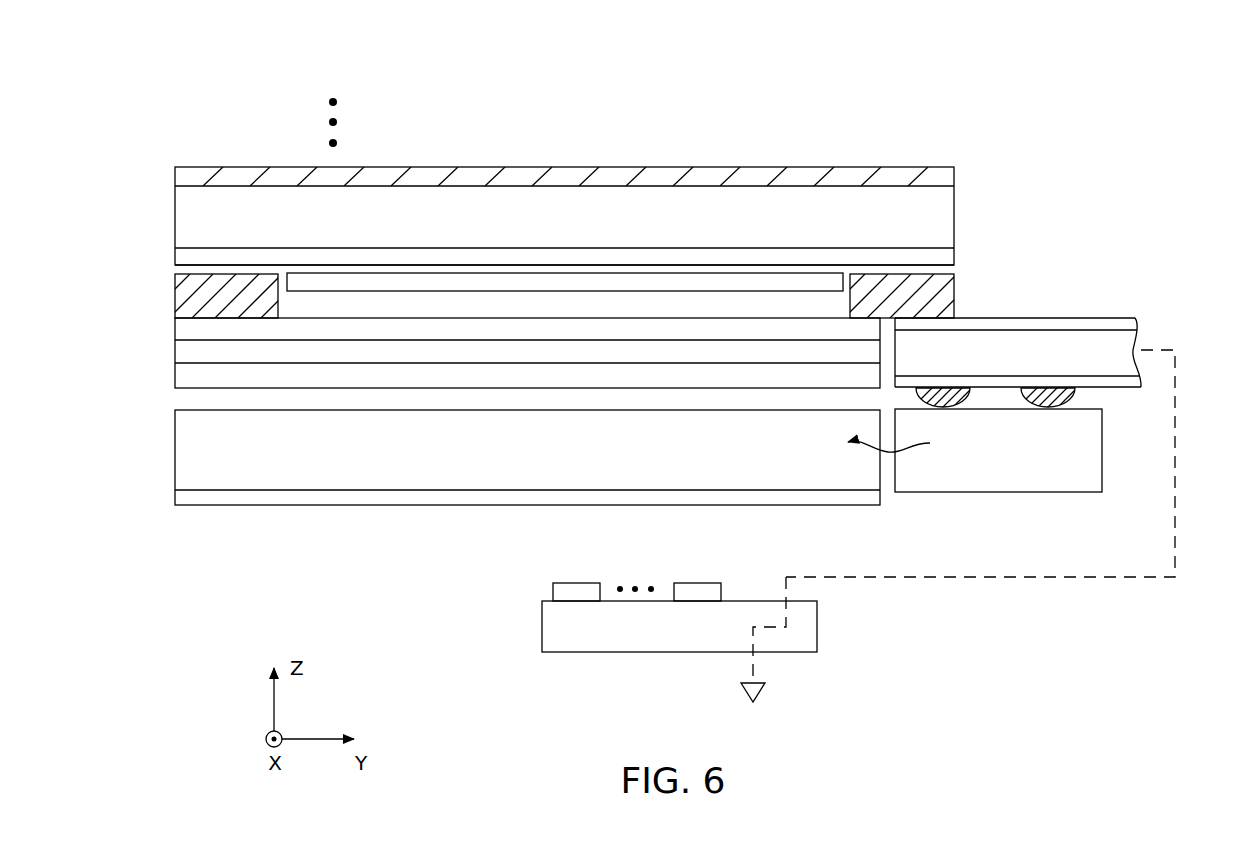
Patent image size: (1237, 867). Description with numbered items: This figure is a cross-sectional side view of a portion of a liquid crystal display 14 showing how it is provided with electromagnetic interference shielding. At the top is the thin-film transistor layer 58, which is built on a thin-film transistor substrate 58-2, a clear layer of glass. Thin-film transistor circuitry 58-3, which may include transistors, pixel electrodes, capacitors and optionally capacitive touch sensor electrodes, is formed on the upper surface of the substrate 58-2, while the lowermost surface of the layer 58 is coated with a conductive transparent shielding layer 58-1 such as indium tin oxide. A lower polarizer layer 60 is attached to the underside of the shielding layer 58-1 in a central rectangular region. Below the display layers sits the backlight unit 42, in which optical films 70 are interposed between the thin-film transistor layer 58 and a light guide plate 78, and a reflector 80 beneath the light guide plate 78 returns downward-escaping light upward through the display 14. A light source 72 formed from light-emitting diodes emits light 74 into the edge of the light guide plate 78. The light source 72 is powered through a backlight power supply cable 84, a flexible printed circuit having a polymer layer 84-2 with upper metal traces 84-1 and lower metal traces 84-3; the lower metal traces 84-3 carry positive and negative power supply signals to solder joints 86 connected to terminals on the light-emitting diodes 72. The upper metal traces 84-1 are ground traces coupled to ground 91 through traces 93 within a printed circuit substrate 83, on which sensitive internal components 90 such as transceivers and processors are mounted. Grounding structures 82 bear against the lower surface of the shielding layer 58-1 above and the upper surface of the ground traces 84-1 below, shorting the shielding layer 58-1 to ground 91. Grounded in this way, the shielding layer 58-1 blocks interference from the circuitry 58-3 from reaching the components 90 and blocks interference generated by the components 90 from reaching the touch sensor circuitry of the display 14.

The display 14 is at (875, 54).
The thin-film transistor layer 58 is at (569, 212).
The thin-film transistor circuitry 58-3 is at (955, 175).
The thin-film transistor substrate 58-2 is at (955, 212).
The shielding layer 58-1 is at (955, 257).
The grounding structures 82 is at (175, 297).
The lower polarizer layer 60 is at (494, 282).
The backlight unit 42 is at (471, 437).
The optical films 70 is at (167, 318).
The light guide plate 78 is at (500, 485).
The reflector 80 is at (400, 505).
The light 74 is at (866, 445).
The backlight power supply cable 84 is at (995, 450).
The upper metal traces 84-1 is at (1107, 322).
The polymer layer 84-2 is at (1120, 340).
The lower metal traces 84-3 is at (1118, 387).
The solder joints 86 is at (1025, 405).
The light source 72 is at (1052, 482).
The printed circuit board 83 is at (550, 635).
The internal components 90 is at (575, 590).
The traces 93 is at (748, 628).
The ground 91 is at (766, 692).